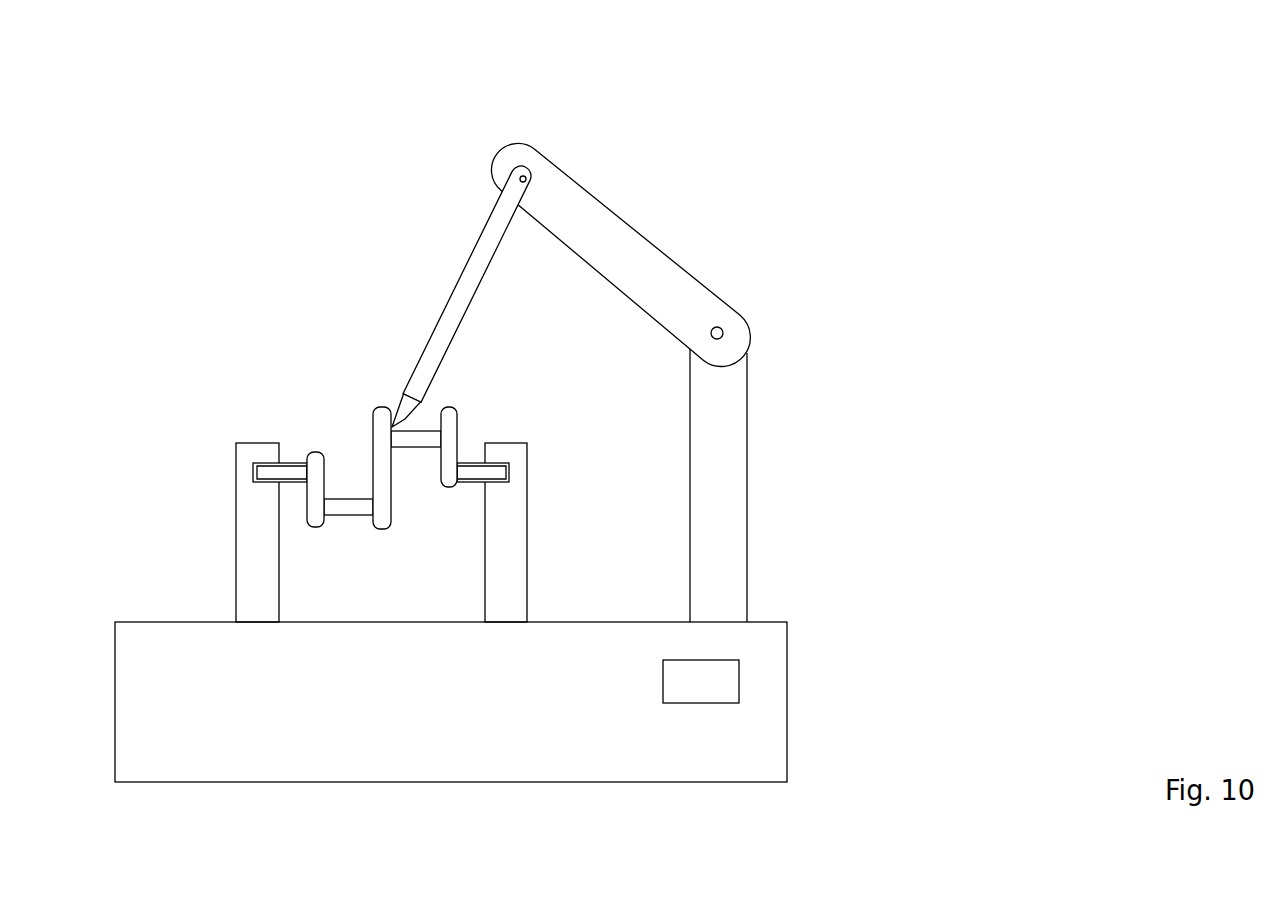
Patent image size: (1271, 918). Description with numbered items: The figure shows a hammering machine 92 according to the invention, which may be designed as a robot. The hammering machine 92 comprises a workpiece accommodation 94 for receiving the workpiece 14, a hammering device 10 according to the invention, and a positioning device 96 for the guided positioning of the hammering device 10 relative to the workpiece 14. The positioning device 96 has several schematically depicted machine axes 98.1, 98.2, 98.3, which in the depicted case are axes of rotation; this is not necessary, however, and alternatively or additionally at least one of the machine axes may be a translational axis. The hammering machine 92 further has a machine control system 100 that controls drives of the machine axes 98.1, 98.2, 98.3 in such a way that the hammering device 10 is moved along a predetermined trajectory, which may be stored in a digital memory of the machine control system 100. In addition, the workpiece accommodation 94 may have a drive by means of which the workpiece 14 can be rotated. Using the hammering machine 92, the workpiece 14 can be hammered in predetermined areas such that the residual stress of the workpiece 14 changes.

The hammering device 10 is at (391, 427).
The workpiece 14 is at (297, 468).
The hammering machine 92 is at (888, 102).
The workpiece accommodation 94 is at (242, 457).
The positioning device 96 is at (588, 345).
The machine axis 98.1 is at (736, 532).
The machine axis 98.2 is at (657, 263).
The machine axis 98.3 is at (486, 252).
The machine control system 100 is at (701, 681).